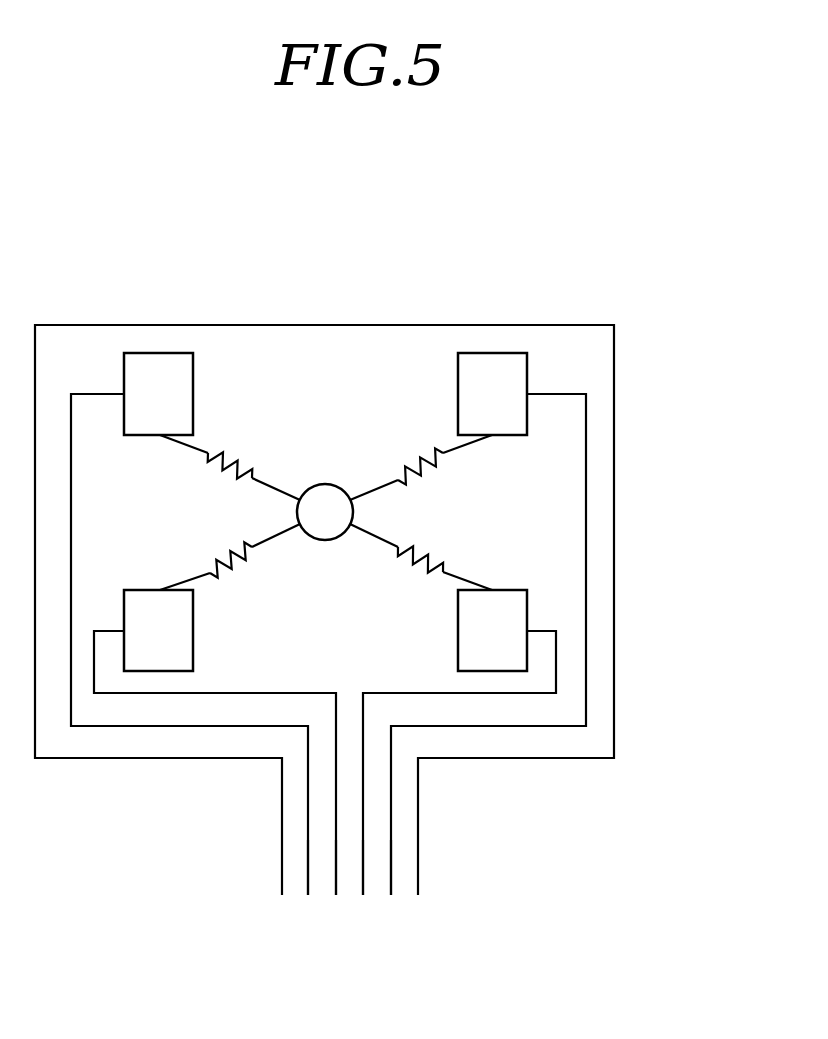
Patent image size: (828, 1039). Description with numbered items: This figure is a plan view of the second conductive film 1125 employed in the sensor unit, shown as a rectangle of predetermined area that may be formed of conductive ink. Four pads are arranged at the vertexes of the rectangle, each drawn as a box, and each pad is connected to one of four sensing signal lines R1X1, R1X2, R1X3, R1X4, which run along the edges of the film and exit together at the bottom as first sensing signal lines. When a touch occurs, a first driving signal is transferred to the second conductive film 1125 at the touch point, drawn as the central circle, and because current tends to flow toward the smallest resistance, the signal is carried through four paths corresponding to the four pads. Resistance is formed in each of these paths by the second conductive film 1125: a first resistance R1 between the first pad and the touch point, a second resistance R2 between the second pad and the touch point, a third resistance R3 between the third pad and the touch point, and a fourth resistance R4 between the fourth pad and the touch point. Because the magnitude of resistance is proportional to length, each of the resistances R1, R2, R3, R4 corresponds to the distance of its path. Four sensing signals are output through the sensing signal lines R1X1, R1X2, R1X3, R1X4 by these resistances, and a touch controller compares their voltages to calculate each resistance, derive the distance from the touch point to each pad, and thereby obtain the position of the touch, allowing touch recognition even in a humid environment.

The second conductive film 1125 is at (649, 273).
The first resistance R1 is at (230, 462).
The second resistance R2 is at (230, 561).
The third resistance R3 is at (421, 561).
The fourth resistance R4 is at (421, 462).
The first sensing signal line R1X1 is at (308, 875).
The first sensing signal line R1X2 is at (335, 840).
The first sensing signal line R1X3 is at (364, 840).
The first sensing signal line R1X4 is at (392, 875).